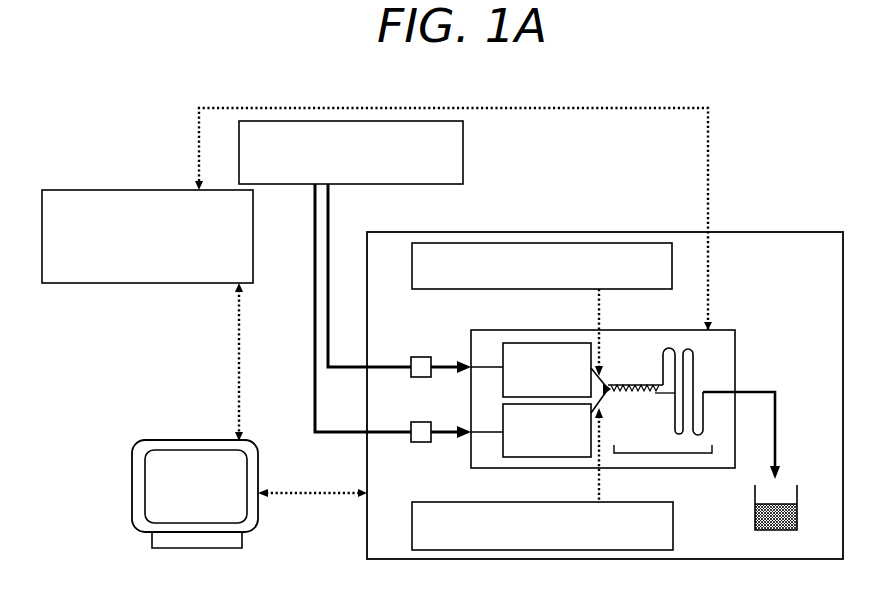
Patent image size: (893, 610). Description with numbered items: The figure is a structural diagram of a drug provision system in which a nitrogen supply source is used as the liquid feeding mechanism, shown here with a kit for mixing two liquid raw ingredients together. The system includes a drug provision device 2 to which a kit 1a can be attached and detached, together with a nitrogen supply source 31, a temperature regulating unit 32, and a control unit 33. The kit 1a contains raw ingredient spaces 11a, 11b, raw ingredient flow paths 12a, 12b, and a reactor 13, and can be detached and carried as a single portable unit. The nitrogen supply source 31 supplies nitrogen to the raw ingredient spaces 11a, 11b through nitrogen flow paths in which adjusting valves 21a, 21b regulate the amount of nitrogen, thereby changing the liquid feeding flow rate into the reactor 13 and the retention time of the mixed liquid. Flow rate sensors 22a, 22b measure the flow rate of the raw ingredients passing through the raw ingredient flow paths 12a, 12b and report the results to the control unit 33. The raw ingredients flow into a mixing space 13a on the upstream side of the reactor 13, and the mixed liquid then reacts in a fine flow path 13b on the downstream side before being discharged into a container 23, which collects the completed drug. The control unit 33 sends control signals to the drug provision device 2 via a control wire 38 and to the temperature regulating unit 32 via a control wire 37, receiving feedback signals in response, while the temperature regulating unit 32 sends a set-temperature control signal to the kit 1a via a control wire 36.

The drug provision device 2 is at (798, 232).
The kit 1a is at (672, 330).
The raw ingredient space 11a is at (568, 381).
The raw ingredient space 11b is at (568, 442).
The raw ingredient flow path 12a is at (602, 372).
The raw ingredient flow path 12b is at (603, 406).
The reactor 13 is at (662, 454).
The mixing space 13a is at (630, 384).
The fine flow path 13b is at (695, 362).
The adjusting valve 21a is at (423, 357).
The adjusting valve 21b is at (424, 442).
The flow rate sensor 22a is at (597, 243).
The flow rate sensor 22b is at (612, 551).
The container 23 is at (755, 504).
The nitrogen supply source 31 is at (463, 148).
The temperature regulating unit 32 is at (121, 190).
The control unit 33 is at (155, 440).
The control wire 36 is at (545, 108).
The control wire 37 is at (238, 345).
The control wire 38 is at (300, 496).